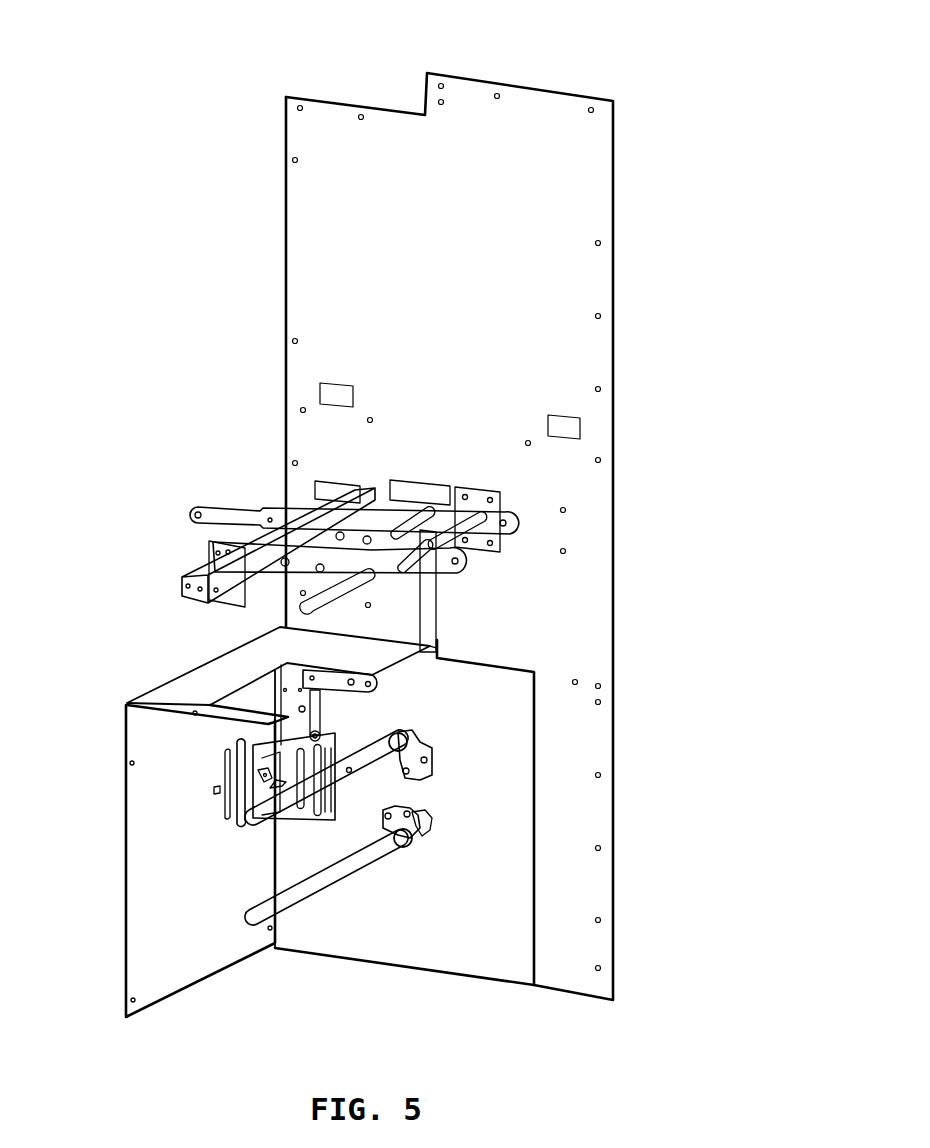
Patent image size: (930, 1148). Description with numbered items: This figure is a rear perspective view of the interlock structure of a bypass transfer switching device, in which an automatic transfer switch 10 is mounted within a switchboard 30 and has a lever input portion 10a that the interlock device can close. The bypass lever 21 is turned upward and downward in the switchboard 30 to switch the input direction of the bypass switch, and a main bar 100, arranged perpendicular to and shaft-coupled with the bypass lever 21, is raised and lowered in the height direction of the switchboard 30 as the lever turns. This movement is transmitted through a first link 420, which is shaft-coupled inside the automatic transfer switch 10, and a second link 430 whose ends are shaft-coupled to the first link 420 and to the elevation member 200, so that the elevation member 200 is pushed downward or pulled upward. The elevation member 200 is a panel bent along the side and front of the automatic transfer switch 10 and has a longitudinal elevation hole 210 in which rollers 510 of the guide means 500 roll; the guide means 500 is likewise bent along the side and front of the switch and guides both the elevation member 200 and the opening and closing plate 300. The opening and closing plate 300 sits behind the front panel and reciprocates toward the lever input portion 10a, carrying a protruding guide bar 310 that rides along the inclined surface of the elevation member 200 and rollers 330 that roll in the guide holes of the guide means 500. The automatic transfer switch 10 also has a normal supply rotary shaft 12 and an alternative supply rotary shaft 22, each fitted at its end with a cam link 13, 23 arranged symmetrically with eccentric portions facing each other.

The switchboard 30 is at (488, 95).
The bypass lever 21 is at (350, 533).
The second link 430 is at (316, 698).
The guide means 500 is at (273, 726).
The rollers 330 is at (273, 732).
The lever input portion 10a is at (228, 772).
The guide bar 310 is at (217, 789).
The opening and closing plate 300 is at (247, 803).
The normal supply rotary shaft 12 is at (275, 806).
The automatic transfer switch 10 is at (190, 975).
The alternative supply rotary shaft 22 is at (318, 888).
The rollers 510 is at (350, 772).
The cam link 23 is at (420, 816).
The main bar 100 is at (428, 613).
The first link 420 is at (345, 676).
The elevation member 200 is at (333, 735).
The cam link 13 is at (425, 752).
The elevation hole 210 is at (341, 762).